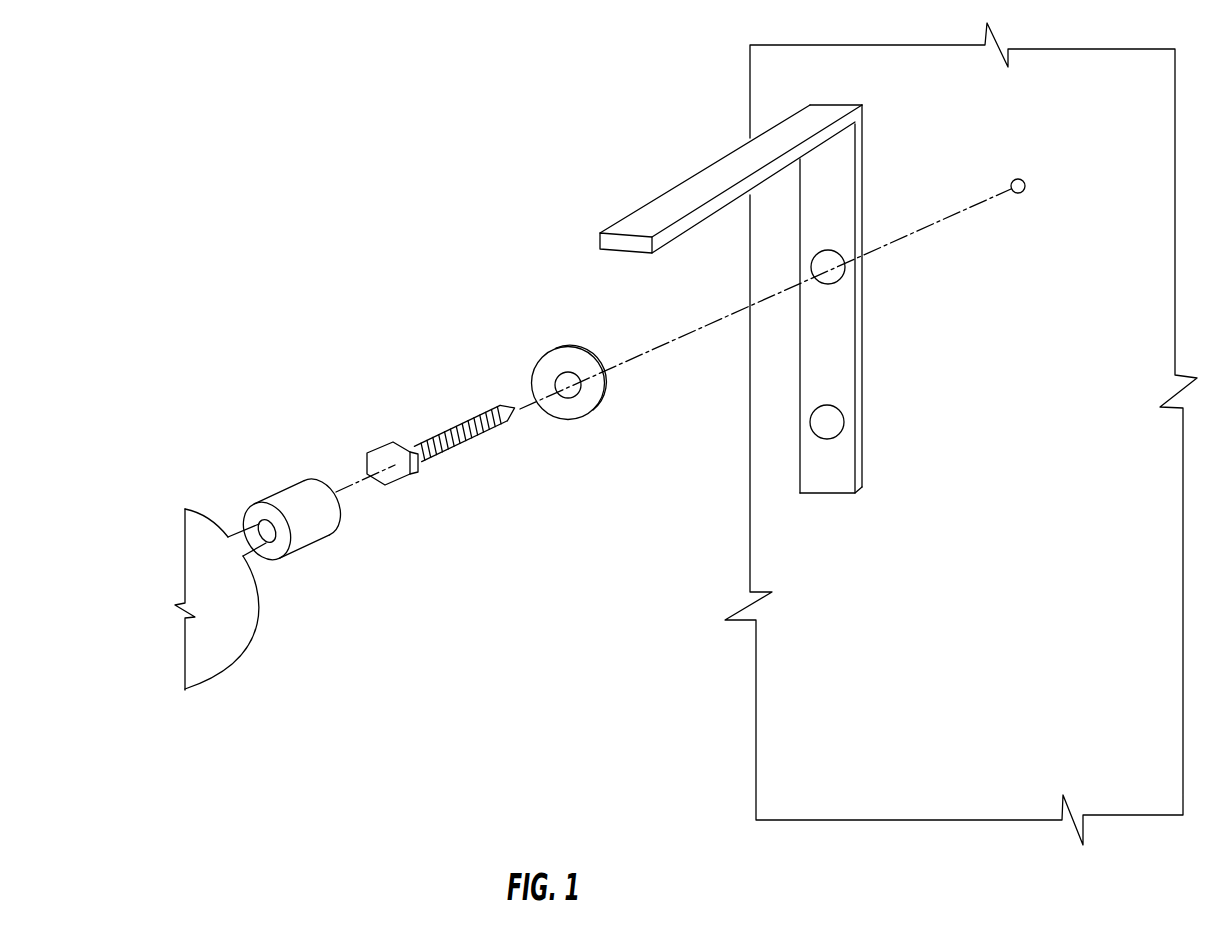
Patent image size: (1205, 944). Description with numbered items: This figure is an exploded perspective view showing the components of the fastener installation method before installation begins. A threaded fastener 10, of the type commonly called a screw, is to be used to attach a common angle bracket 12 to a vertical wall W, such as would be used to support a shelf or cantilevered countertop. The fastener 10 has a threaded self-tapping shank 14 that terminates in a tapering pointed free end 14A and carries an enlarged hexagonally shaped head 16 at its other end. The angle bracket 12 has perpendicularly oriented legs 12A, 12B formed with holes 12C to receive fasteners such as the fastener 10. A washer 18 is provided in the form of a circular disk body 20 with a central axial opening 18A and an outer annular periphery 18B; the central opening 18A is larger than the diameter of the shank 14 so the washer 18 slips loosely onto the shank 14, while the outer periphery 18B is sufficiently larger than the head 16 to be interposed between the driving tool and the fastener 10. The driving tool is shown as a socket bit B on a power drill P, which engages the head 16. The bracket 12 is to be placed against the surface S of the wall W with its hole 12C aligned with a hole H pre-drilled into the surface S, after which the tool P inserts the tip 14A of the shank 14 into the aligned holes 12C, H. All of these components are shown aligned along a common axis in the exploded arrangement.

The threaded fastener 10 is at (456, 442).
The angle bracket 12 is at (756, 319).
The leg of angle bracket 12A is at (847, 348).
The leg of angle bracket 12B is at (657, 222).
The hole in angle bracket 12C is at (845, 267).
The threaded self-tapping shank 14 is at (463, 387).
The tapering pointed free end 14A is at (512, 405).
The enlarged hexagonally shaped head 16 is at (388, 484).
The washer 18 is at (611, 399).
The central axial opening 18A is at (572, 388).
The outer annular periphery 18B is at (607, 378).
The circular disk body 20 is at (582, 360).
The socket bit B is at (303, 540).
The power drill P is at (223, 603).
The hole in wall H is at (1025, 186).
The surface of wall S is at (1031, 628).
The vertical wall W is at (947, 795).